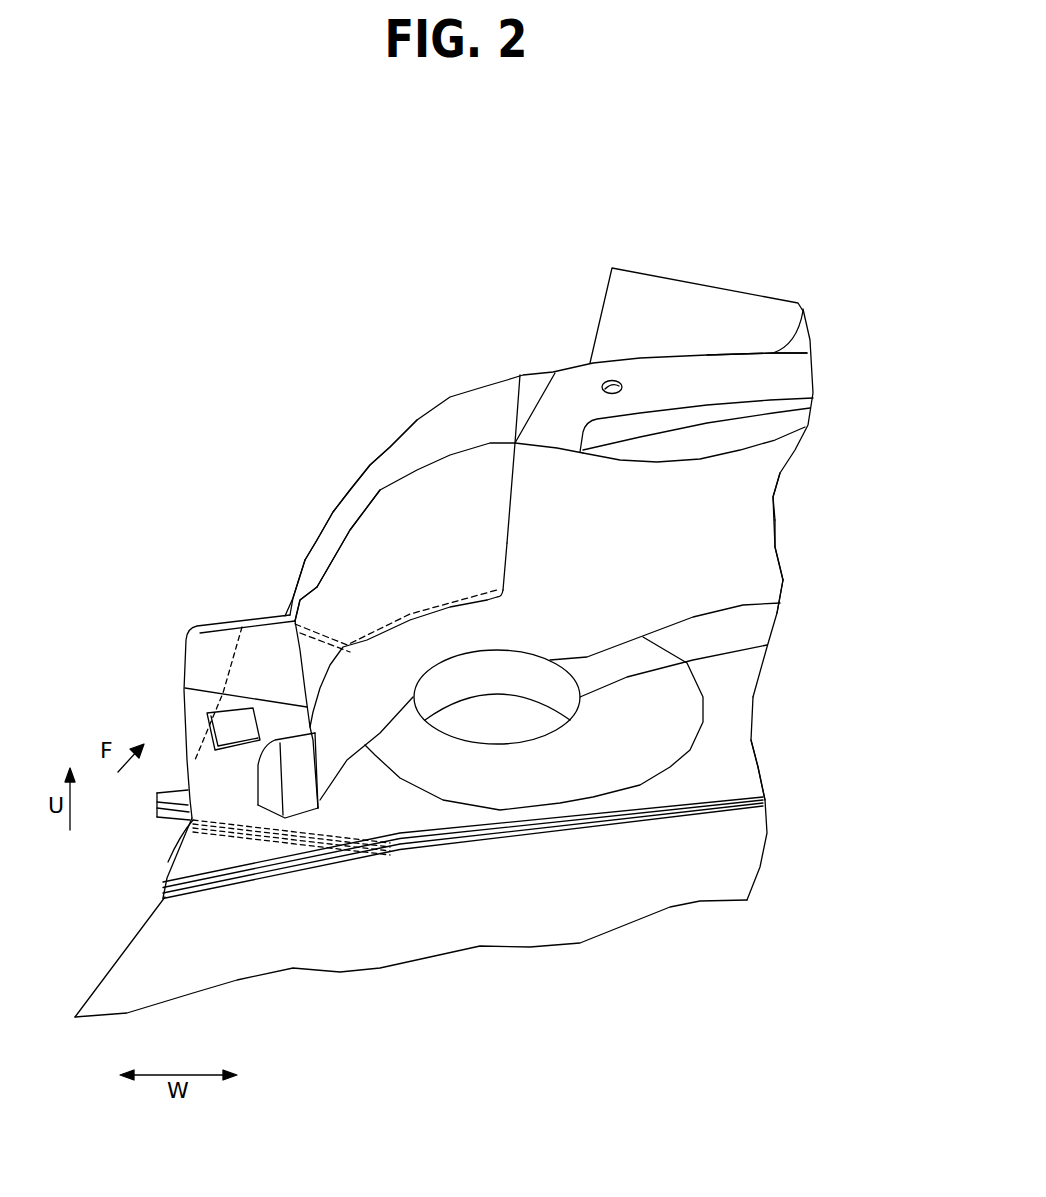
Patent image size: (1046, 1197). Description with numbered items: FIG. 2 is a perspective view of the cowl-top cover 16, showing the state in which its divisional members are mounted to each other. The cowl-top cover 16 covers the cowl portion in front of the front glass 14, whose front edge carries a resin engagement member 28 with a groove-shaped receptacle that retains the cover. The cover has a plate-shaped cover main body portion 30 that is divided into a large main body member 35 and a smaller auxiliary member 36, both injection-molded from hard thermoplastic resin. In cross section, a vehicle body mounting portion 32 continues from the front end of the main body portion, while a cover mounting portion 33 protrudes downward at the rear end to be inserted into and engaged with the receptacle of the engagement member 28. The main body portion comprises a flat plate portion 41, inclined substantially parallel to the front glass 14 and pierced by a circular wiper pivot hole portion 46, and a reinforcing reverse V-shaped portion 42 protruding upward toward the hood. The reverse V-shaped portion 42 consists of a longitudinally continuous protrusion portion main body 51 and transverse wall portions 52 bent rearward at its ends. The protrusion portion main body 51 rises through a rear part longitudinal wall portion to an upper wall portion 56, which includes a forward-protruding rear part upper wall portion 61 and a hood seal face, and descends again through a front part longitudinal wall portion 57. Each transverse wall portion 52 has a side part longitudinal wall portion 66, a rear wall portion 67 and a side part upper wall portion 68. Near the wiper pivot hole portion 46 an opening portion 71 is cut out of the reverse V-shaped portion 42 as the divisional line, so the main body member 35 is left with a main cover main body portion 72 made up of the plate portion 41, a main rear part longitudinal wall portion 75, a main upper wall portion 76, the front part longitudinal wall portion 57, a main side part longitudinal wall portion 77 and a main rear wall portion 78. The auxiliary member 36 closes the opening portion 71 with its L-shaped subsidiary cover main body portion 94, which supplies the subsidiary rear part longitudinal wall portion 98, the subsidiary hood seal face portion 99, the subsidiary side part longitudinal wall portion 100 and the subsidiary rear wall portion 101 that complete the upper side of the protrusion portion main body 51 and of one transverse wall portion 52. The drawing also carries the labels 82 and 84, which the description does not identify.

The front glass 14 is at (752, 846).
The cowl-top cover 16 is at (604, 231).
The engagement member 28 is at (755, 804).
The cover main body portion 30 is at (738, 773).
The vehicle body mounting portion 32 is at (703, 285).
The cover mounting portion 33 is at (140, 806).
The main body member 35 is at (773, 471).
The auxiliary member 36 is at (483, 384).
The flat plate portion 41 is at (738, 736).
The reverse V-shaped portion 42 is at (755, 506).
The wiper pivot hole portion 46 is at (760, 648).
The protrusion portion main body 51 is at (755, 586).
The transverse wall portion 52 is at (322, 608).
The upper wall portion 56 is at (783, 388).
The front part longitudinal wall portion 57 is at (804, 314).
The rear part upper wall portion 61 is at (568, 372).
The side part longitudinal wall portion 66 is at (340, 583).
The rear wall portion 67 is at (196, 712).
The side part upper wall portion 68 is at (337, 533).
The opening portion 71 is at (495, 597).
The main cover main body portion 72 is at (755, 631).
The main rear part longitudinal wall portion 75 is at (755, 546).
The main upper wall portion 76 is at (800, 373).
The main side part longitudinal wall portion 77 is at (333, 757).
The main rear wall portion 78 is at (258, 758).
The top edge portion 82 is at (787, 362).
The hidden lower edge 84 is at (407, 807).
The subsidiary cover main body portion 94 is at (492, 558).
The subsidiary rear part longitudinal wall portion 98 is at (447, 588).
The subsidiary hood seal face portion 99 is at (505, 396).
The subsidiary side part longitudinal wall portion 100 is at (375, 528).
The subsidiary rear wall portion 101 is at (217, 650).